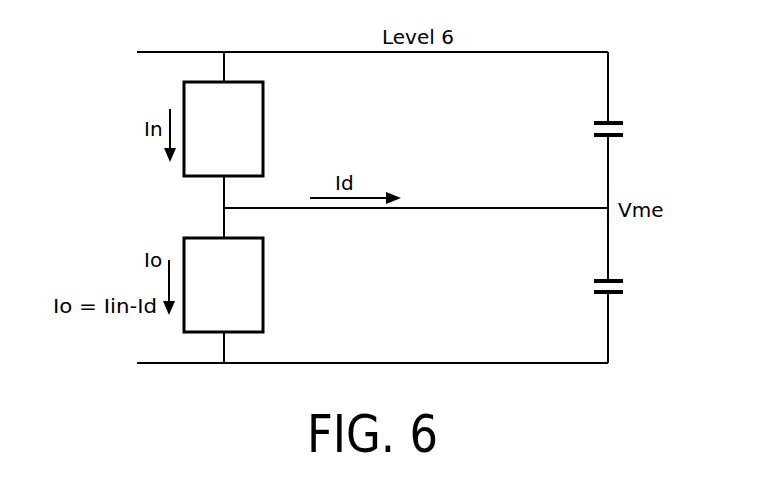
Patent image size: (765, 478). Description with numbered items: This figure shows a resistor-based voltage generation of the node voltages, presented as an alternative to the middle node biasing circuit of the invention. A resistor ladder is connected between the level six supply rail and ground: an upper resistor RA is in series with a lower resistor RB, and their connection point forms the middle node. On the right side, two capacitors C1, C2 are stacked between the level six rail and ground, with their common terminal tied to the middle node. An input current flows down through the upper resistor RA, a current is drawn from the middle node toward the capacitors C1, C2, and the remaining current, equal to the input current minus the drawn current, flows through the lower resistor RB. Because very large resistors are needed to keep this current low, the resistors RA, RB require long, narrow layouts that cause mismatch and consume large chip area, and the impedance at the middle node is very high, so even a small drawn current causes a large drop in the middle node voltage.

The resistor RA is at (223, 129).
The resistor RB is at (223, 285).
The capacitor C1 is at (626, 131).
The capacitor C2 is at (626, 289).